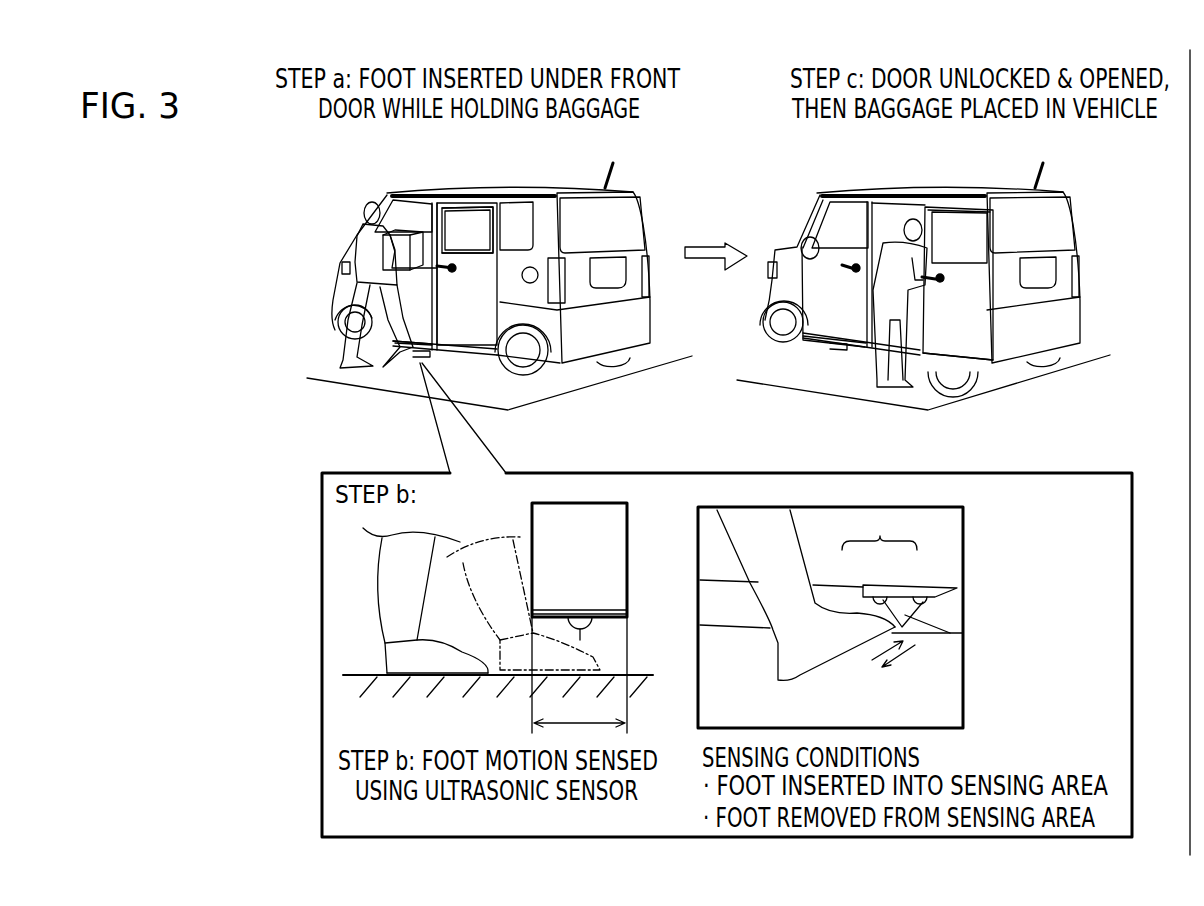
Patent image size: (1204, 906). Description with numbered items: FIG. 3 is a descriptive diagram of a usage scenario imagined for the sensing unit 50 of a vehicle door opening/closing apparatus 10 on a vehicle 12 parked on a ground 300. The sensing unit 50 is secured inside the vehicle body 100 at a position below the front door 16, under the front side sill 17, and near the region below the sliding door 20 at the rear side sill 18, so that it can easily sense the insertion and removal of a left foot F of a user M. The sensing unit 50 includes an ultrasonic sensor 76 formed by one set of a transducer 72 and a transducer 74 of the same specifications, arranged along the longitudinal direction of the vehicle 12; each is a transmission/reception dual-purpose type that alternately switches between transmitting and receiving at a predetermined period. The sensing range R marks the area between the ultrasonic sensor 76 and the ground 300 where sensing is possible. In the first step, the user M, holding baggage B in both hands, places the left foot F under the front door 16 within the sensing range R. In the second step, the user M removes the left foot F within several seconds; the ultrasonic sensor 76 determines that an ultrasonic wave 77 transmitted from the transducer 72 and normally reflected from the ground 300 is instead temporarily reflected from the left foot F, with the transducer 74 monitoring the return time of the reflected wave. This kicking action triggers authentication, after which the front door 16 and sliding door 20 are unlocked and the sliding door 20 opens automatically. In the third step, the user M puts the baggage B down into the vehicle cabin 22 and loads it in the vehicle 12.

The vehicle 10 is at (401, 384).
The vehicle 12 is at (546, 181).
The front door 16 is at (407, 293).
The front side sill 17 is at (408, 343).
The rear side sill 18 is at (462, 343).
The sliding door 20 is at (467, 210).
The vehicle cabin 22 is at (423, 206).
The sensing unit 50 is at (432, 355).
The transducer 72 is at (581, 615).
The transducer 74 is at (920, 595).
The ultrasonic sensor 76 is at (879, 530).
The ultrasonic wave 77 is at (582, 638).
The vehicle body 100 is at (443, 188).
The ground 300 is at (573, 375).
The user M is at (358, 210).
The baggage B is at (425, 247).
The left foot F is at (350, 333).
The sensing range R is at (579, 675).